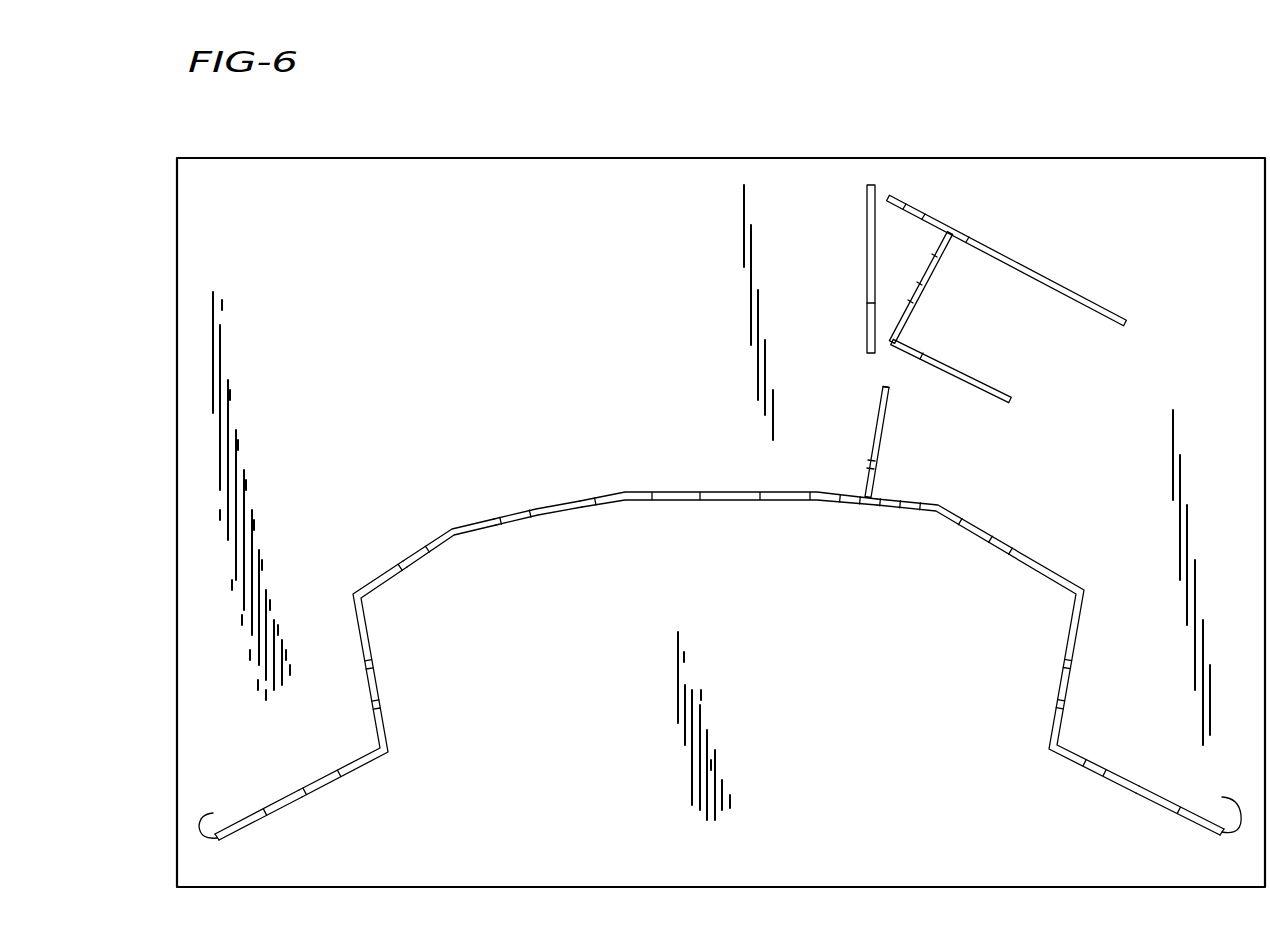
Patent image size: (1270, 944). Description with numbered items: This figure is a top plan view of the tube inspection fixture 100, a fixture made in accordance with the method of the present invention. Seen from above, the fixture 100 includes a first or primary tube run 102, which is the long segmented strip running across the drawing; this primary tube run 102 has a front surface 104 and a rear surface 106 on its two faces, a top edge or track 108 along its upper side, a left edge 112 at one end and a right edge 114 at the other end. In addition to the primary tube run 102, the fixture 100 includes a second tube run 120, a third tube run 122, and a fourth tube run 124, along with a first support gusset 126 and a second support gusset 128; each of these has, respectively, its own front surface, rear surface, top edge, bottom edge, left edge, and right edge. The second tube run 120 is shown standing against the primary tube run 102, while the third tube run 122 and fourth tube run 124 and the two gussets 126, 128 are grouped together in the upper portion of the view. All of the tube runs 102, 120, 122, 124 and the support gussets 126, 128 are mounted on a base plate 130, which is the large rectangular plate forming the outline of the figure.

The tube inspection fixture 100 is at (448, 146).
The first or primary tube run 102 is at (438, 536).
The front surface 104 is at (575, 522).
The rear surface 106 is at (695, 484).
The top edge or track 108 is at (361, 637).
The left edge 112 is at (213, 813).
The right edge 114 is at (1188, 799).
The second tube run 120 is at (883, 448).
The third tube run 122 is at (913, 312).
The fourth tube run 124 is at (866, 246).
The first support gusset 126 is at (970, 378).
The second support gusset 128 is at (1027, 265).
The base plate 130 is at (897, 420).